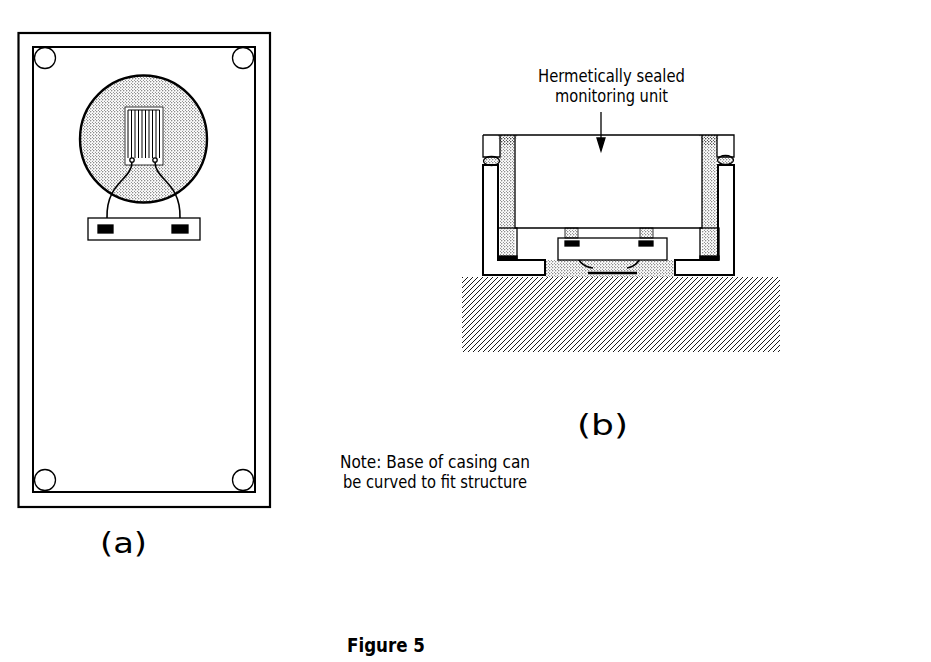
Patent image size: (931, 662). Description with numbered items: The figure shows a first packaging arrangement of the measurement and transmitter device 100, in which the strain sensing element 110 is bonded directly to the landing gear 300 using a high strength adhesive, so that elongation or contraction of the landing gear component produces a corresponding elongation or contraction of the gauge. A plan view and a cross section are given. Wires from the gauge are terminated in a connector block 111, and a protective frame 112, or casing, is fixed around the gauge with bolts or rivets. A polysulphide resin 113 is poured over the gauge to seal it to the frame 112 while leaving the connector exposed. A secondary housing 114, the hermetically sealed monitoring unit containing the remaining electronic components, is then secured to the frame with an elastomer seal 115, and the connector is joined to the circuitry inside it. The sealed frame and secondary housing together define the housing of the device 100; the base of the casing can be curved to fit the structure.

The measurement and transmitter device 100 is at (279, 388).
The sensing element 110 is at (170, 127).
The connector block 111 is at (207, 233).
The protective frame 112 is at (274, 195).
The polysulphide resin 113 is at (652, 280).
The secondary housing 114 is at (668, 130).
The elastomer seal 115 is at (476, 160).
The landing gear 300 is at (748, 275).